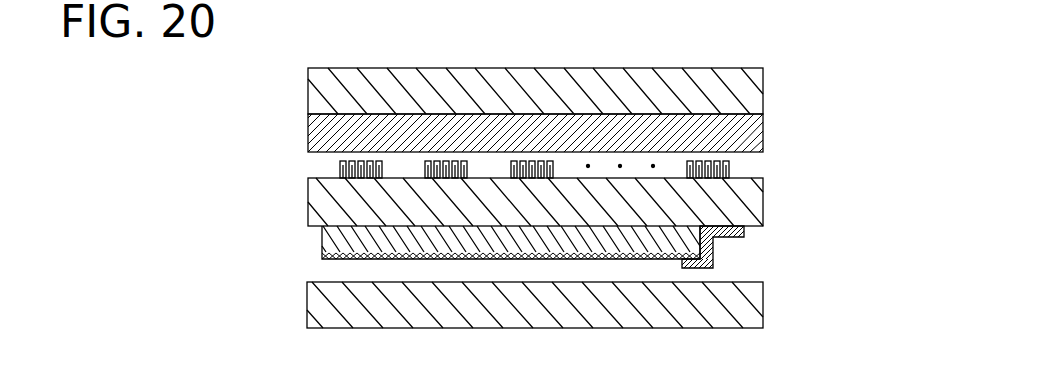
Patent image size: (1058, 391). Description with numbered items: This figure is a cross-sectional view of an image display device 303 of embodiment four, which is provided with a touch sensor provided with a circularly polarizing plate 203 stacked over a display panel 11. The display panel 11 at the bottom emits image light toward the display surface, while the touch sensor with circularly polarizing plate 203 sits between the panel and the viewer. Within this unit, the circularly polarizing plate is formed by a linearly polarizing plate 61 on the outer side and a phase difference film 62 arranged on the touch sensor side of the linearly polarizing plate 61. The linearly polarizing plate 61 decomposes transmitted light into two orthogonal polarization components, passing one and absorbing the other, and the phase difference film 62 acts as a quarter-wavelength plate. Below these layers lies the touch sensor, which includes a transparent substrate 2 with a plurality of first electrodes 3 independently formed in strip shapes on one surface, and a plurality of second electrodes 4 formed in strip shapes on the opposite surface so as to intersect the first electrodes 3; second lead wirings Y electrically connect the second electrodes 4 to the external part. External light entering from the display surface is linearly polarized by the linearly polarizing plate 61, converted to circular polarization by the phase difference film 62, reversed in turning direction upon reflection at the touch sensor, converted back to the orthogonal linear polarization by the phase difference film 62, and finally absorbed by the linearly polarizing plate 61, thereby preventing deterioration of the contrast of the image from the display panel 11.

The image display device 303 is at (260, 140).
The touch sensor provided with a circularly polarizing plate 203 is at (832, 65).
The linearly polarizing plate 61 is at (722, 88).
The phase difference film 62 is at (730, 131).
The first electrodes 3 is at (735, 167).
The transparent substrate 2 is at (720, 199).
The second electrodes 4 is at (335, 241).
The second lead wirings Y is at (744, 235).
The display panel 11 is at (722, 298).